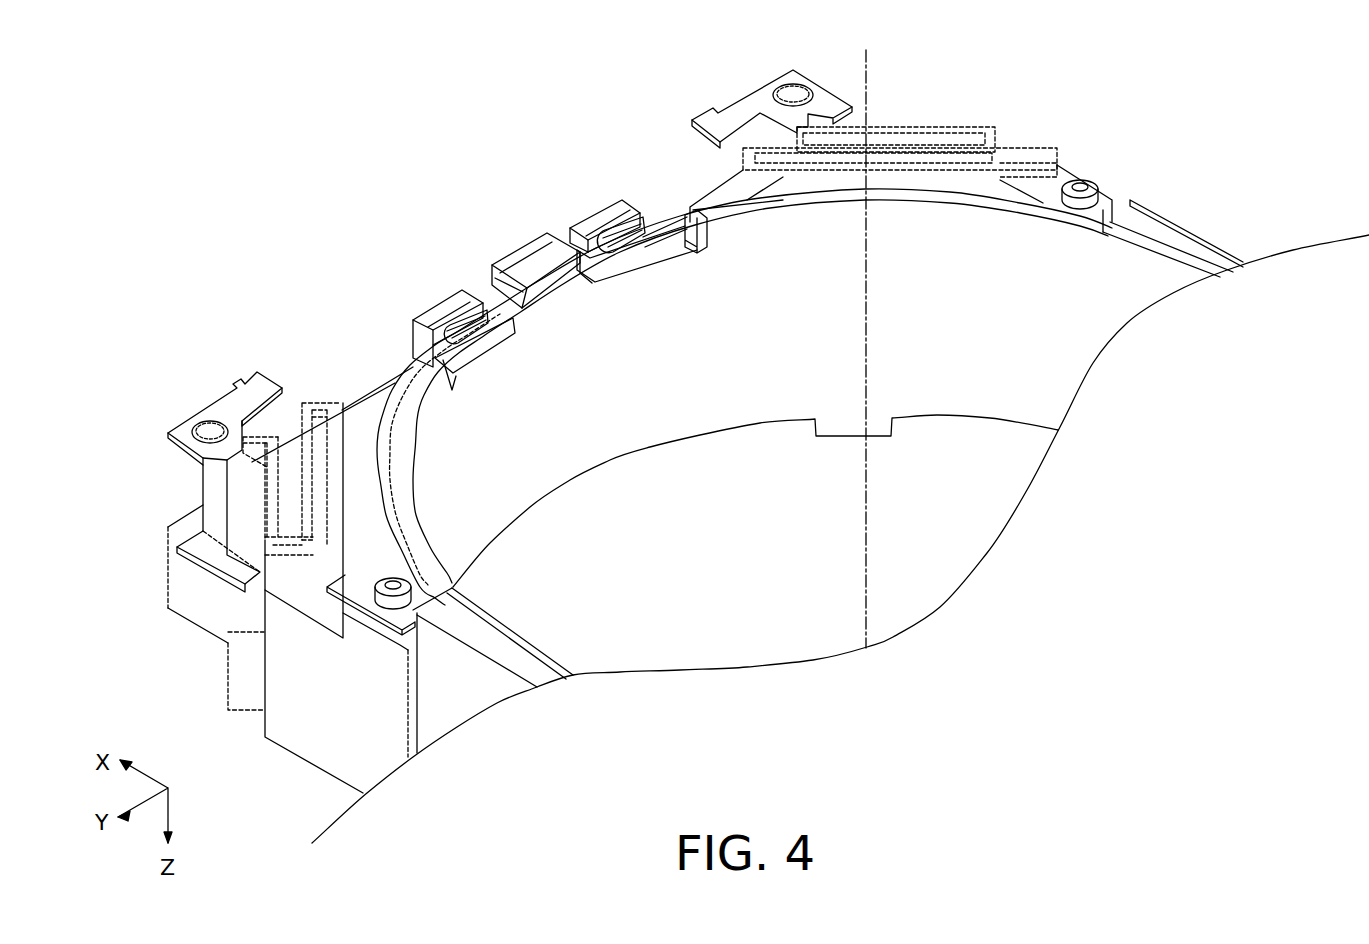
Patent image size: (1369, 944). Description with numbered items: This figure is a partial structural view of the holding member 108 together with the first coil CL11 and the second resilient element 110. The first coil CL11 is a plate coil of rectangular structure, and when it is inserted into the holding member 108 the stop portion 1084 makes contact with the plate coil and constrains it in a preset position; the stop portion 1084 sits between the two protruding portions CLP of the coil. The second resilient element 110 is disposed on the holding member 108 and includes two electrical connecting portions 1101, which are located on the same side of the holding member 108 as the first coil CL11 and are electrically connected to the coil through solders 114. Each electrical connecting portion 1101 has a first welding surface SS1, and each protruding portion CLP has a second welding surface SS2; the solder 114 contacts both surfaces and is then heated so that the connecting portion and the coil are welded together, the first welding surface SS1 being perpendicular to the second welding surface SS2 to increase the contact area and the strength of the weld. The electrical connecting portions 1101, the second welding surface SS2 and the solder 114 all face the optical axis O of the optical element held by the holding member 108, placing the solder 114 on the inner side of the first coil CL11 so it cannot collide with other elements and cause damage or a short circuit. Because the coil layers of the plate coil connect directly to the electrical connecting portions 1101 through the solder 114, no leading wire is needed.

The second resilient element 110 is at (223, 408).
The first coil CL11 is at (377, 397).
The solder 114 is at (463, 322).
The protruding portion CLP is at (463, 300).
The stop portion 1084 is at (528, 257).
The first welding surface SS1 is at (610, 215).
The second welding surface SS2 is at (663, 210).
The holding member 108 is at (993, 200).
The electrical connecting portion 1101 is at (645, 253).
The optical axis O is at (862, 337).